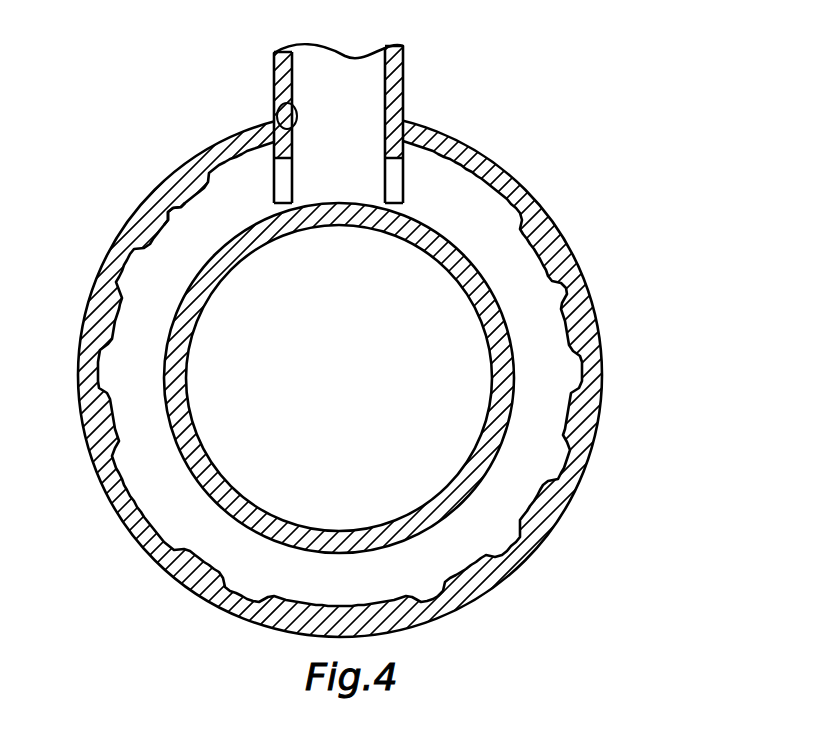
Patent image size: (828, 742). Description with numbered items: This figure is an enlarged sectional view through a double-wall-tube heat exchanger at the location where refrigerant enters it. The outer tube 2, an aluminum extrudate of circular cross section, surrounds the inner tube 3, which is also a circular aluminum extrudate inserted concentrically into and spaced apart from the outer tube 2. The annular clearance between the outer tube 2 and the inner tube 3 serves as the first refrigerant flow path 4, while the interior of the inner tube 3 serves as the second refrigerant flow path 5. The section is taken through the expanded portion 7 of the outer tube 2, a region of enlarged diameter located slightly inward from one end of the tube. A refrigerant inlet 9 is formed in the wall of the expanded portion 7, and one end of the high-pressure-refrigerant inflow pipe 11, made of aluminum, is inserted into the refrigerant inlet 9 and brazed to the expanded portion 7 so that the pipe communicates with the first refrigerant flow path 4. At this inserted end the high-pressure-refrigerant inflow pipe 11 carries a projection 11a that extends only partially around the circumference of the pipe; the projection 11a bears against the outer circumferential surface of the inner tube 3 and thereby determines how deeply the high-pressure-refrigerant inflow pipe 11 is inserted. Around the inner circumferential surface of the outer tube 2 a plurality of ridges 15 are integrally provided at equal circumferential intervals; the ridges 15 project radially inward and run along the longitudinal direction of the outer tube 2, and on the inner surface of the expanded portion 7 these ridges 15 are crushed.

The outer tube 2 is at (414, 371).
The inner tube 3 is at (452, 492).
The first refrigerant flow path 4 is at (558, 283).
The second refrigerant flow path 5 is at (336, 365).
The expanded portion 7 is at (603, 333).
The refrigerant inlet 9 is at (290, 122).
The high-pressure-refrigerant inflow pipe 11 is at (414, 371).
The projection 11a is at (397, 182).
The ridges 15 is at (163, 207).